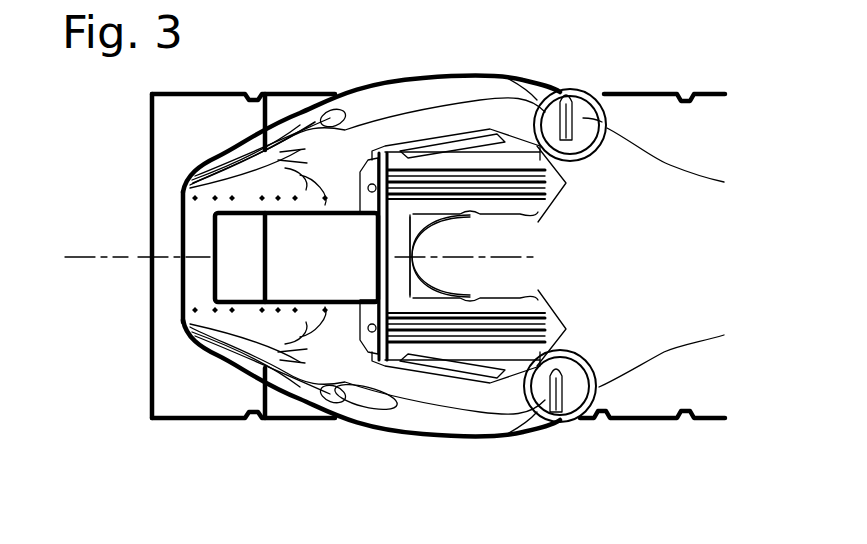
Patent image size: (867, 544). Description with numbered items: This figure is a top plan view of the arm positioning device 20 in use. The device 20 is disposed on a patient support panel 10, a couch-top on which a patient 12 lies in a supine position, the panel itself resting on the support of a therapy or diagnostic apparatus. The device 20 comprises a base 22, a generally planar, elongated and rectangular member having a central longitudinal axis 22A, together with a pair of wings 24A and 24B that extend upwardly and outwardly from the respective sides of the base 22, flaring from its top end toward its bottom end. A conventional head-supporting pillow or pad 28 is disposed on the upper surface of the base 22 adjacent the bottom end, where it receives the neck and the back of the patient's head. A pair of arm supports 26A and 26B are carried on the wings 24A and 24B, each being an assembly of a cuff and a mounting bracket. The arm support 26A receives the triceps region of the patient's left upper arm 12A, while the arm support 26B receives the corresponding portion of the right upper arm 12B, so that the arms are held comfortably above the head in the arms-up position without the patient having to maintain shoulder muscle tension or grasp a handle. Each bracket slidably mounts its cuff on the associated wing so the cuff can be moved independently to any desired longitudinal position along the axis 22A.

The patient support panel 10 is at (190, 384).
The patient 12 is at (548, 263).
The left upper arm 12A is at (478, 103).
The right upper arm 12B is at (490, 397).
The arm positioning device 20 is at (322, 270).
The base 22 is at (197, 247).
The central longitudinal axis 22A is at (118, 262).
The wing 24A is at (322, 110).
The wing 24B is at (373, 415).
The arm support 26A is at (590, 120).
The arm support 26B is at (573, 392).
The head-supporting pillow or pad 28 is at (245, 160).